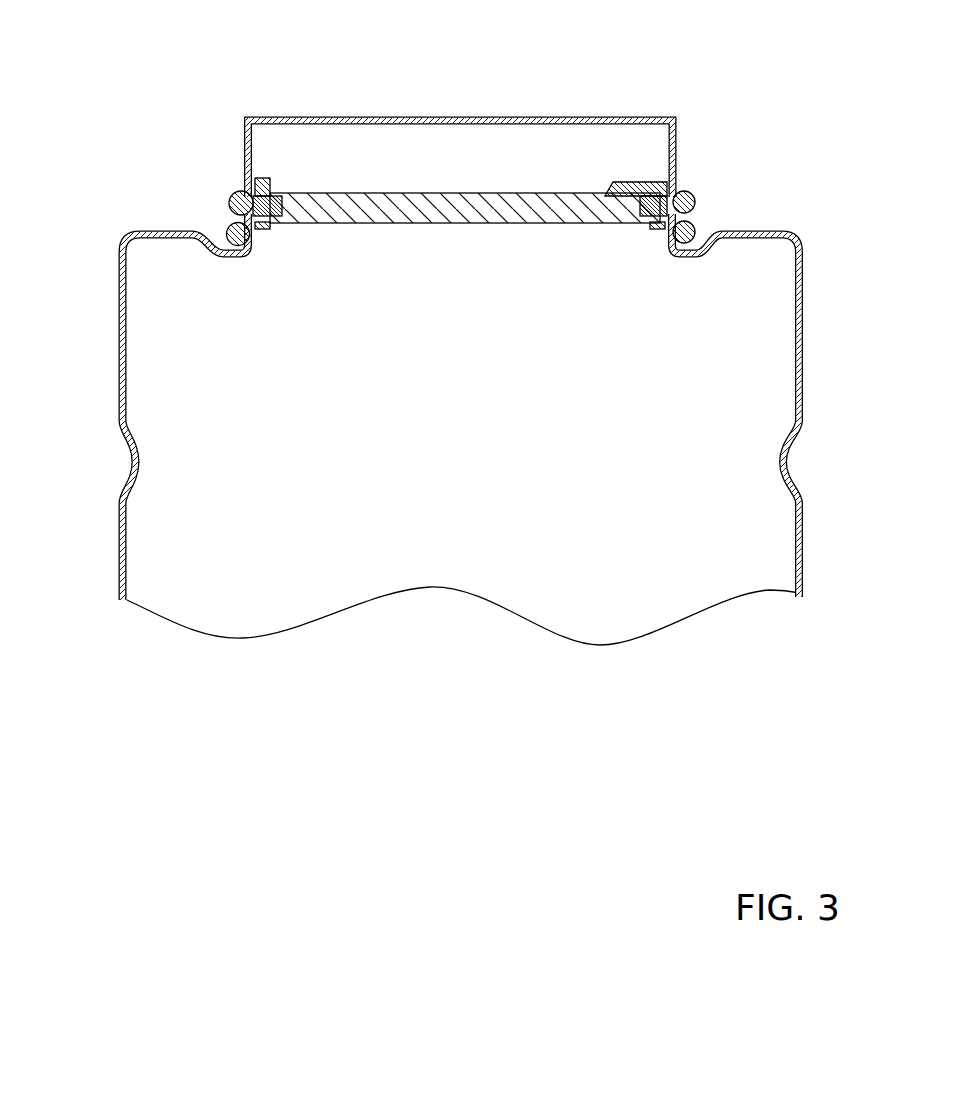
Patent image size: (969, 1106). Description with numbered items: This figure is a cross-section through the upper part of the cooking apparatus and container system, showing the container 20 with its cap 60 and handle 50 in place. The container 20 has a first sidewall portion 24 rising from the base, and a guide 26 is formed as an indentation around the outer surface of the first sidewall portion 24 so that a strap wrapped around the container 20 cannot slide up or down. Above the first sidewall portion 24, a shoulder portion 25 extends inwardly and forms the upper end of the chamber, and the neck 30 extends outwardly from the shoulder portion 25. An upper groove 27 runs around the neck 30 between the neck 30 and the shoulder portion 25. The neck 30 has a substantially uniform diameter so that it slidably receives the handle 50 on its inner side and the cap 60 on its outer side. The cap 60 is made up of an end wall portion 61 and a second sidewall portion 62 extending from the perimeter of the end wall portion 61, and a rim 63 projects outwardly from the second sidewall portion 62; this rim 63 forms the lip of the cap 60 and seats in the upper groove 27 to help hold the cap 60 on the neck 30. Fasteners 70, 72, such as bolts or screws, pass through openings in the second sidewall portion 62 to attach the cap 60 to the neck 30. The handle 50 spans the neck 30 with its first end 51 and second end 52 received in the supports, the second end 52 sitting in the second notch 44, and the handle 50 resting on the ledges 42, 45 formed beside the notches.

The container 20 is at (447, 423).
The first sidewall portion 24 is at (803, 523).
The shoulder portion 25 is at (783, 243).
The guide 26 is at (132, 468).
The upper groove 27 is at (703, 247).
The neck 30 is at (437, 304).
The ledge 42 is at (650, 228).
The second notch 44 is at (267, 181).
The ledge 45 is at (258, 229).
The handle 50 is at (468, 252).
The first end 51 is at (633, 182).
The second end 52 is at (338, 193).
The cap 60 is at (412, 103).
The end wall portion 61 is at (433, 117).
The second sidewall portion 62 is at (243, 125).
The rim 63 is at (233, 230).
The fastener 70 is at (687, 190).
The fastener 72 is at (230, 203).